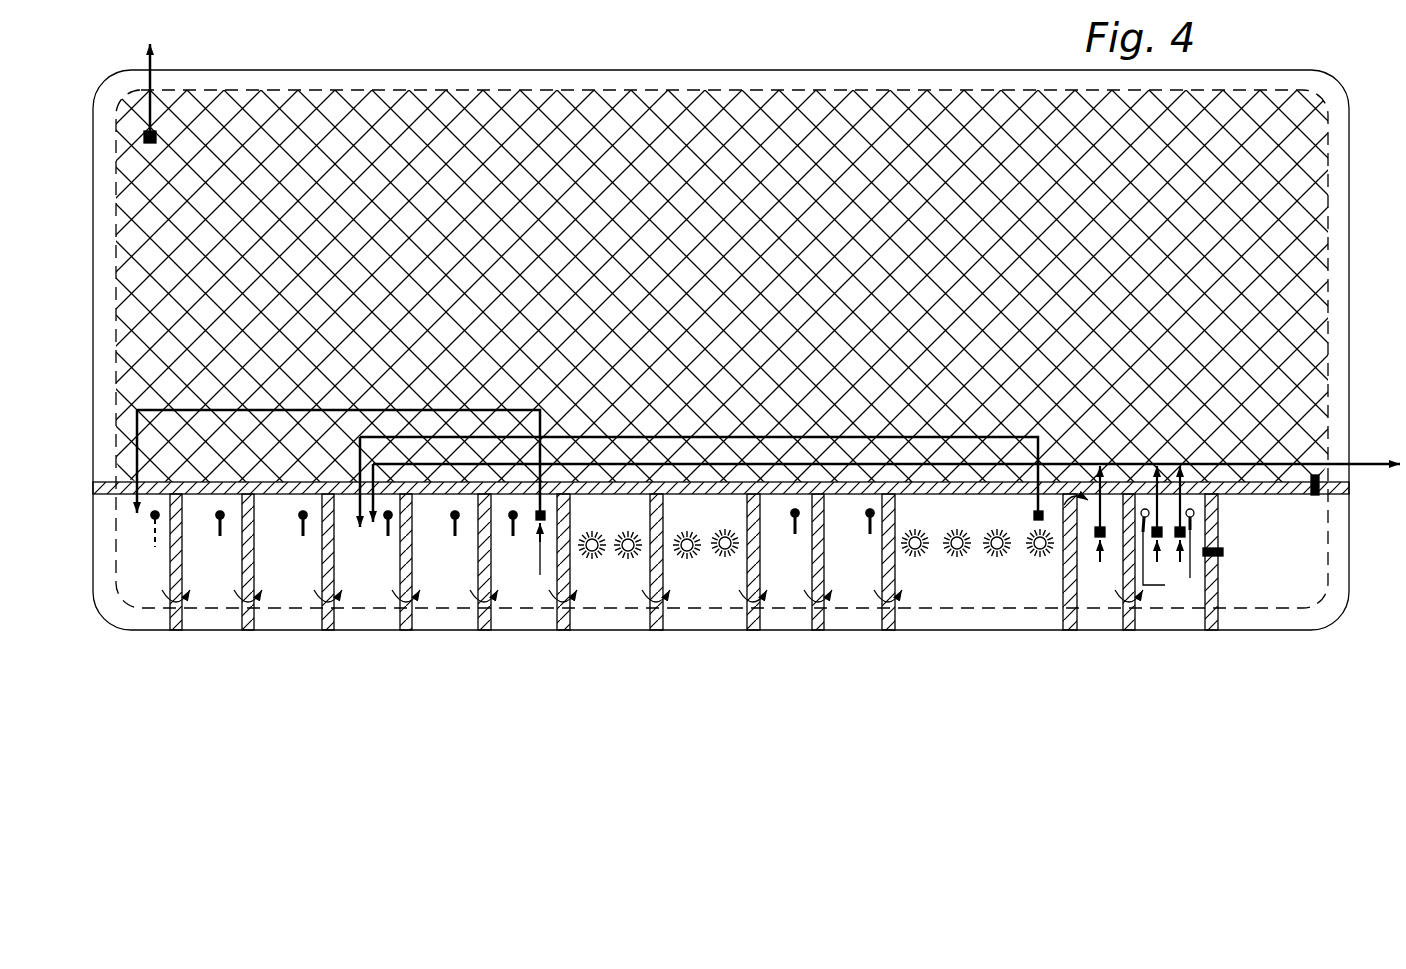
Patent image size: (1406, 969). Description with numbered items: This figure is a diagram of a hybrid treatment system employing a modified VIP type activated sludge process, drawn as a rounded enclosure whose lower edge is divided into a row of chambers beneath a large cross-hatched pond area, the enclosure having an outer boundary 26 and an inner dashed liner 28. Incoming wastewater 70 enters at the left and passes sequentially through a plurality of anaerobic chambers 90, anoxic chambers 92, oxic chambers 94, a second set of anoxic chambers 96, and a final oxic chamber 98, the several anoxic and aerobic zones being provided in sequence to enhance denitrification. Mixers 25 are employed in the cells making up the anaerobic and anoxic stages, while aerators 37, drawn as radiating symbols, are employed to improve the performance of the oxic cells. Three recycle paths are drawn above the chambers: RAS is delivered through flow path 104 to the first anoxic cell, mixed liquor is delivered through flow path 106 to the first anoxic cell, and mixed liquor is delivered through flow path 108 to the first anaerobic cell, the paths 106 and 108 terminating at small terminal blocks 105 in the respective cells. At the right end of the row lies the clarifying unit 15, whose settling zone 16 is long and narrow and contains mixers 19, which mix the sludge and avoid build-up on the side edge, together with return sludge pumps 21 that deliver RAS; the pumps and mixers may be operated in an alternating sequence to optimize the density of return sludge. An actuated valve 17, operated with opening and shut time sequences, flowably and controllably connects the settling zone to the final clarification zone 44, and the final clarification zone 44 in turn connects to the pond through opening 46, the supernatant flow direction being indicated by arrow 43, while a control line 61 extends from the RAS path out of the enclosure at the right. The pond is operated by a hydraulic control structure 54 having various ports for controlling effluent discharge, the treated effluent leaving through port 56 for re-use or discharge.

The clarifying unit 15 is at (1252, 614).
The settling zone 16 is at (1092, 614).
The actuated valve 17 is at (1226, 552).
The mixers 19 is at (1170, 555).
The return sludge pumps 21 is at (1136, 529).
The mixers 25 is at (504, 543).
The stabilized slope portion 26 is at (1332, 598).
The liner 28 is at (1312, 563).
The aerators 37 is at (622, 558).
The flow direction 43 is at (1173, 447).
The final clarification zone 44 is at (1284, 590).
The opening 46 is at (1324, 490).
The hydraulic control structure 54 is at (142, 135).
The port 56 is at (148, 63).
The control bus 61 is at (1396, 460).
The incoming wastewater 70 is at (123, 560).
The anaerobic chambers 90 is at (286, 614).
The anoxic chambers 92 is at (524, 614).
The oxic chambers 94 is at (690, 599).
The anoxic chambers 96 is at (856, 596).
The oxic chamber 98 is at (1018, 592).
The flow path 104 is at (1067, 461).
The terminal block 105 is at (1031, 515).
The flow path 106 is at (883, 434).
The flow path 108 is at (187, 406).